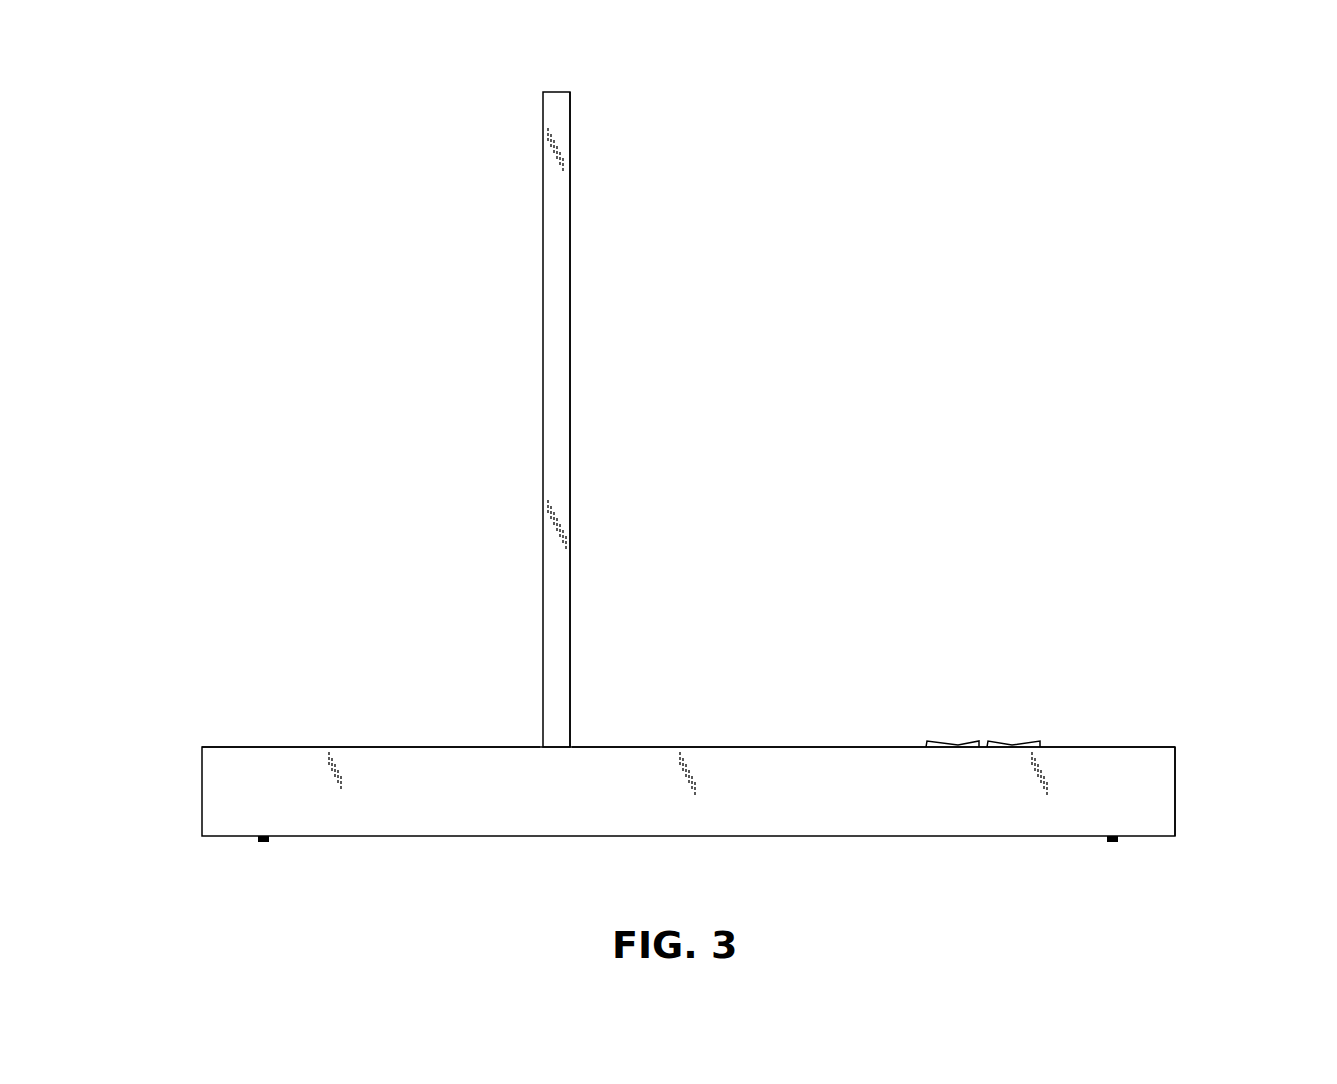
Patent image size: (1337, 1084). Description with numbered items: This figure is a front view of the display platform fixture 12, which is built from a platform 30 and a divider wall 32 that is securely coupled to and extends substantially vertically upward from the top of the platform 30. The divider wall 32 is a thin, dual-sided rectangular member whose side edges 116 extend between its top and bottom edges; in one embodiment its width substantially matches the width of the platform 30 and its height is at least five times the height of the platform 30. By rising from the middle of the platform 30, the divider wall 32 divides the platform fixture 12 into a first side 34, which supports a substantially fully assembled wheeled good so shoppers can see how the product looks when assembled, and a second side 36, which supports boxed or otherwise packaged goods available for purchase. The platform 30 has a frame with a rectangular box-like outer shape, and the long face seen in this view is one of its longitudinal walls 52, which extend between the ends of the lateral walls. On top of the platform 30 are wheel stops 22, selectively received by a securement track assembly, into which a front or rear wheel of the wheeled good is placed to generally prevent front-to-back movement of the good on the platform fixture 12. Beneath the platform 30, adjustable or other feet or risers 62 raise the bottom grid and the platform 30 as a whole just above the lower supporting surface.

The platform fixture 12 is at (240, 97).
The divider wall 32 is at (567, 264).
The side edges 116 is at (553, 420).
The platform 30 is at (476, 820).
The second side 36 is at (400, 728).
The first side 34 is at (670, 727).
The longitudinal wall 52 is at (1153, 788).
The wheel stop 22 is at (938, 741).
The feet or risers 62 is at (263, 845).